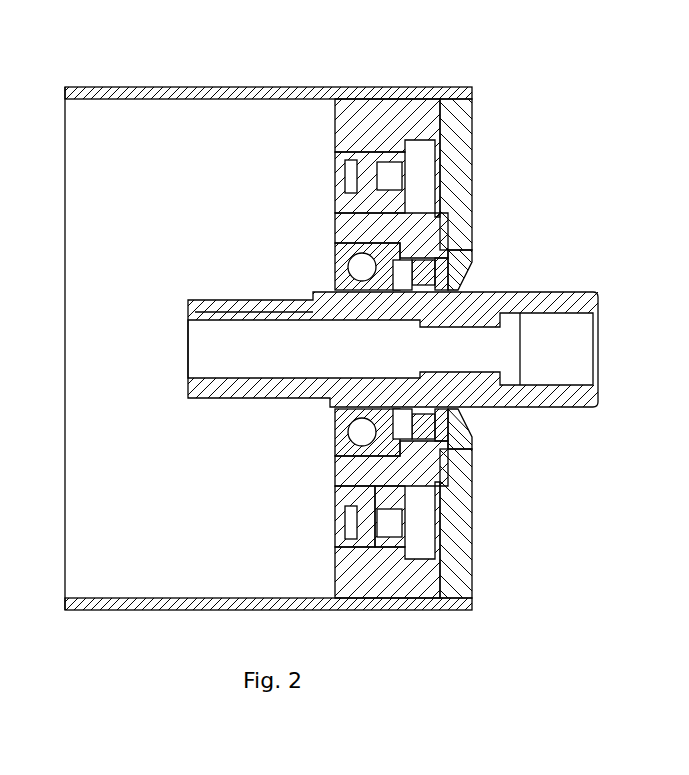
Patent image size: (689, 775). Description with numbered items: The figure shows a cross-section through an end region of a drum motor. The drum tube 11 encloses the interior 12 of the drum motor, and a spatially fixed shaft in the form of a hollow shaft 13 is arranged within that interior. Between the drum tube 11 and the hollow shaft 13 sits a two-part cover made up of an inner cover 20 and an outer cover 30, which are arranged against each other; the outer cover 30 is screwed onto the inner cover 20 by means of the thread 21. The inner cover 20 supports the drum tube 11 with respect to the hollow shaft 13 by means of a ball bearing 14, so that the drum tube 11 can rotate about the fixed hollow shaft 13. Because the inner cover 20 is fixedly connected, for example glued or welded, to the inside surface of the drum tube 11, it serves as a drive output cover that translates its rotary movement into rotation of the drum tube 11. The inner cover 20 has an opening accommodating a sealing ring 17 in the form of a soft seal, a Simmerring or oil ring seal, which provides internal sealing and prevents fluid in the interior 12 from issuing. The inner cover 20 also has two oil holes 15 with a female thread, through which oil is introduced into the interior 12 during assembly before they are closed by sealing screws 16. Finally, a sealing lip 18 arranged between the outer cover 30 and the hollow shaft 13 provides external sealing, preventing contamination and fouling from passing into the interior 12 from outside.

The drum tube 11 is at (180, 97).
The interior 12 is at (92, 128).
The hollow shaft 13 is at (556, 300).
The ball bearing 14 is at (441, 443).
The oil holes 15 is at (340, 523).
The sealing screws 16 is at (364, 518).
The sealing ring 17 is at (478, 424).
The sealing lip 18 is at (470, 250).
The inner cover 20 is at (370, 117).
The thread 21 is at (433, 213).
The outer cover 30 is at (474, 90).